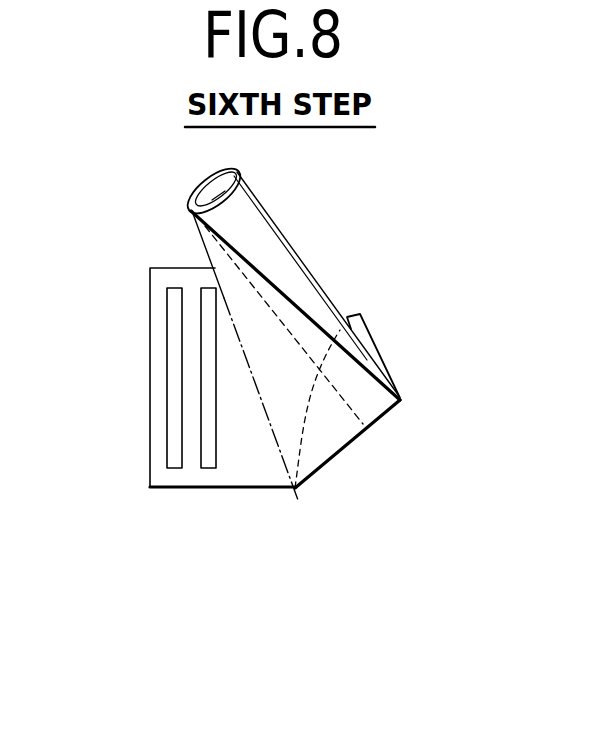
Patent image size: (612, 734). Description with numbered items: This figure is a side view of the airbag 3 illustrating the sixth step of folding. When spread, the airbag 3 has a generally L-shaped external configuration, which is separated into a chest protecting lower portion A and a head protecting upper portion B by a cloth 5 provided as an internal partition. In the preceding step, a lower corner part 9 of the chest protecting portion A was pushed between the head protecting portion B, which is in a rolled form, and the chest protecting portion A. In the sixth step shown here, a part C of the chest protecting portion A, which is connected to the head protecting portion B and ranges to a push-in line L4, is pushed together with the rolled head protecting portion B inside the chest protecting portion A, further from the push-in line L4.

The airbag 3 is at (134, 242).
The partition cloth 5 is at (291, 302).
The lower corner part 9 is at (372, 332).
The chest protecting lower portion A is at (208, 478).
The head protecting upper portion B is at (278, 232).
The part of the chest protecting portion C is at (337, 452).
The push-in line L4 is at (268, 420).